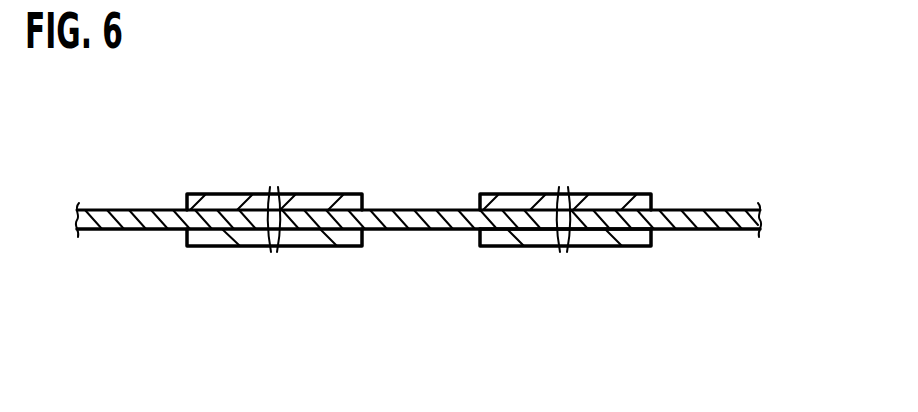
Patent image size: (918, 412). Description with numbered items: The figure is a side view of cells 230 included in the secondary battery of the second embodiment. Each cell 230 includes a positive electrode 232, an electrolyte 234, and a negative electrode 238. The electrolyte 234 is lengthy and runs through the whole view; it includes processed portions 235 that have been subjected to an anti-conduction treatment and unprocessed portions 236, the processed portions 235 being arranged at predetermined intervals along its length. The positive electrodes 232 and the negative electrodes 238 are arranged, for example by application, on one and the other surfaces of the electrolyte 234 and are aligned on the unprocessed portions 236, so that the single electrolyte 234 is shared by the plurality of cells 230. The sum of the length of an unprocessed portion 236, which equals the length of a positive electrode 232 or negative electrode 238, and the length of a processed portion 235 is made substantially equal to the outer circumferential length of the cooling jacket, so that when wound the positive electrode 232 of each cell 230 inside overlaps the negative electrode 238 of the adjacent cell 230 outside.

The cell 230 is at (419, 184).
The positive electrode 232 is at (332, 193).
The electrolyte 234 is at (419, 296).
The processed portion 235 is at (135, 229).
The unprocessed portion 236 is at (491, 231).
The negative electrode 238 is at (317, 246).